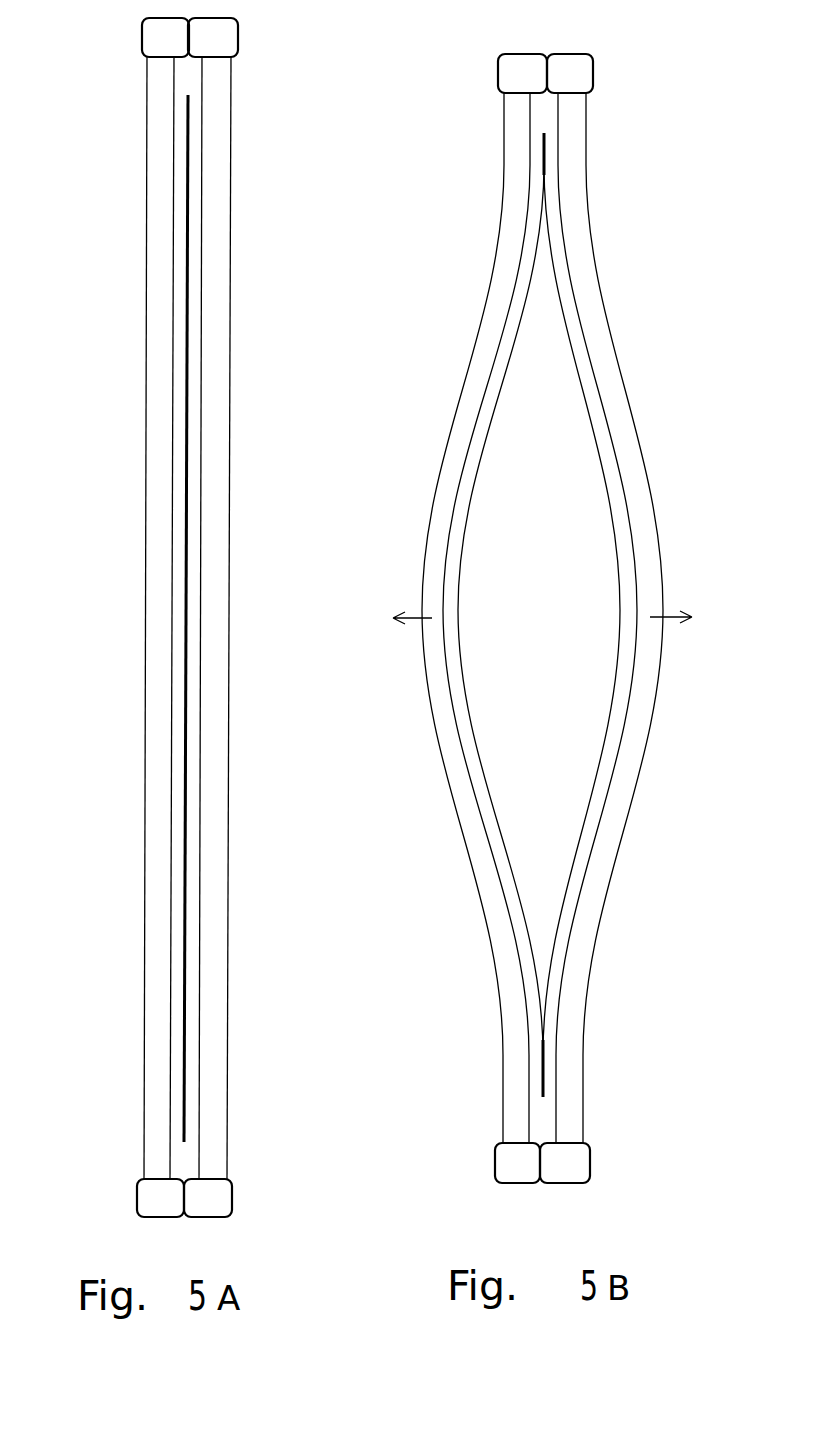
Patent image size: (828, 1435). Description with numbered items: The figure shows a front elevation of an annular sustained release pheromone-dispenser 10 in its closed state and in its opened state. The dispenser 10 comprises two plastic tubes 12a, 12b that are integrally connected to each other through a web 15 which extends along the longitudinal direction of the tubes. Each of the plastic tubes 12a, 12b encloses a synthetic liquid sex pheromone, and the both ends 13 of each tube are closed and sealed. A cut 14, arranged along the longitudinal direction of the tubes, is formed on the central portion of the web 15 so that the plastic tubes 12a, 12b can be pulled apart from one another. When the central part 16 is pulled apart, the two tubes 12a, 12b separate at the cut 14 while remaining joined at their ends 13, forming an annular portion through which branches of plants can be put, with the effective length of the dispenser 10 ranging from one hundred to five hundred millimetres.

In FIG. 5A, the annular sustained release pheromone-dispenser 10 is at (275, 280).
In FIG. 5B, the annular sustained release pheromone-dispenser 10 is at (610, 254).
In FIG. 5A, the plastic tube 12a is at (158, 407).
In FIG. 5B, the plastic tube 12a is at (468, 411).
In FIG. 5A, the plastic tube 12b is at (220, 412).
In FIG. 5B, the plastic tube 12b is at (627, 422).
In FIG. 5A, the ends of plastic tube 13 is at (153, 38).
In FIG. 5B, the ends of plastic tube 13 is at (580, 72).
In FIG. 5A, the cut 14 is at (194, 530).
In FIG. 5A, the web 15 is at (180, 762).
In FIG. 5B, the web 15 is at (617, 727).
In FIG. 5B, the central part 16 is at (540, 335).